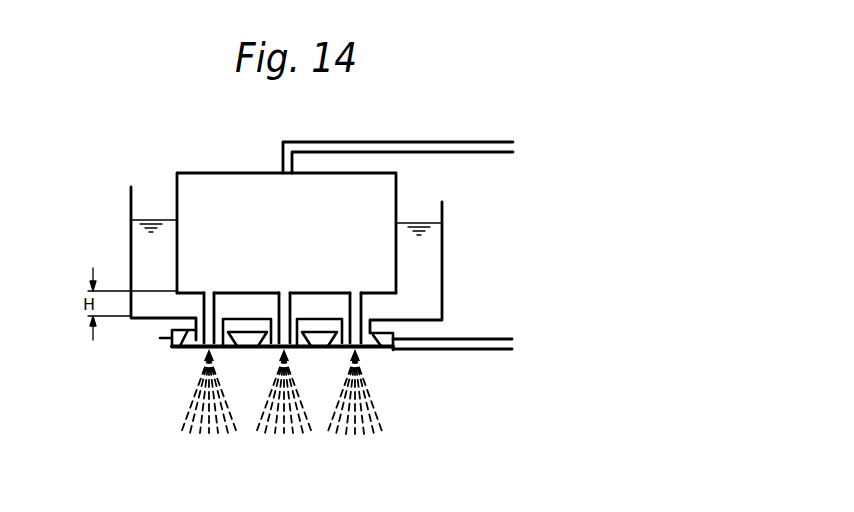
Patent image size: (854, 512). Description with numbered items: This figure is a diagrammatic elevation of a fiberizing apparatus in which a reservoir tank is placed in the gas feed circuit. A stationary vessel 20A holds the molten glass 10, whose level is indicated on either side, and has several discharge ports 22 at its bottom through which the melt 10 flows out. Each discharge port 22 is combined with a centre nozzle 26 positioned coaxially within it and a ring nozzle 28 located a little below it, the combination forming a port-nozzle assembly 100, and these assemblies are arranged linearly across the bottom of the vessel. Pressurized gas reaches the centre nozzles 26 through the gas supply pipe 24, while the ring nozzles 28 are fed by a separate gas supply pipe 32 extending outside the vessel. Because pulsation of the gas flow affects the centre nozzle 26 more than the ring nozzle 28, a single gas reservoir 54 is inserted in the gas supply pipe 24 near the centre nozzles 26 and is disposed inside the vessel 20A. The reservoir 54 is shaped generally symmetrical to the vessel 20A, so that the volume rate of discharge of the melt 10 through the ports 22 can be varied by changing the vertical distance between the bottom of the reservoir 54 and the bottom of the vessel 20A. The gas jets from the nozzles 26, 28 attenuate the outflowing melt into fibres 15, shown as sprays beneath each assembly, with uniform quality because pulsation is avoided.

The molten glass 10 is at (150, 218).
The gas reservoir 54 is at (232, 172).
The gas supply pipe 24 is at (378, 143).
The vessel 20A is at (130, 228).
The discharge port 22 is at (192, 322).
The ring nozzle 28 is at (178, 348).
The centre nozzle 26 is at (217, 297).
The port-nozzle assembly 100 is at (379, 354).
The gas supply pipe 32 is at (490, 337).
The fibres 15 is at (183, 417).